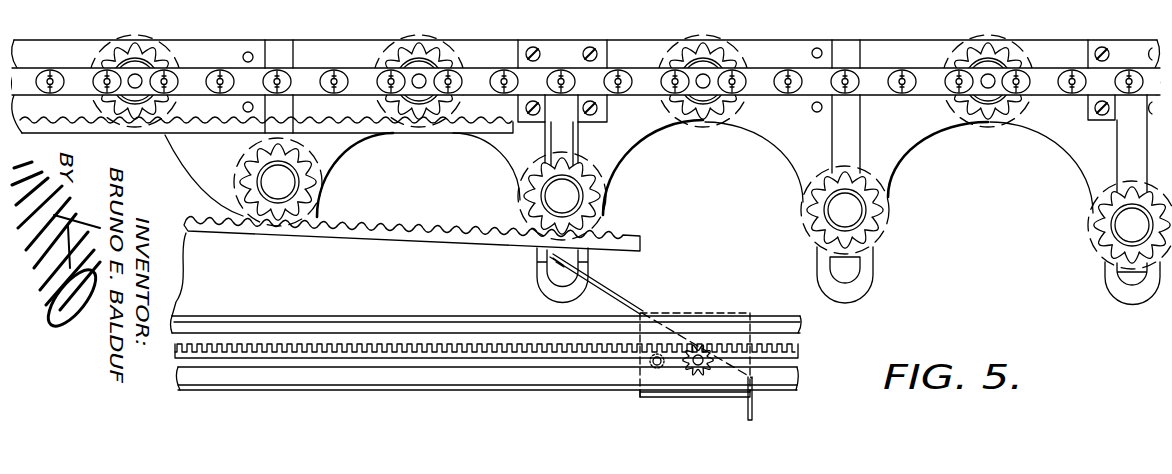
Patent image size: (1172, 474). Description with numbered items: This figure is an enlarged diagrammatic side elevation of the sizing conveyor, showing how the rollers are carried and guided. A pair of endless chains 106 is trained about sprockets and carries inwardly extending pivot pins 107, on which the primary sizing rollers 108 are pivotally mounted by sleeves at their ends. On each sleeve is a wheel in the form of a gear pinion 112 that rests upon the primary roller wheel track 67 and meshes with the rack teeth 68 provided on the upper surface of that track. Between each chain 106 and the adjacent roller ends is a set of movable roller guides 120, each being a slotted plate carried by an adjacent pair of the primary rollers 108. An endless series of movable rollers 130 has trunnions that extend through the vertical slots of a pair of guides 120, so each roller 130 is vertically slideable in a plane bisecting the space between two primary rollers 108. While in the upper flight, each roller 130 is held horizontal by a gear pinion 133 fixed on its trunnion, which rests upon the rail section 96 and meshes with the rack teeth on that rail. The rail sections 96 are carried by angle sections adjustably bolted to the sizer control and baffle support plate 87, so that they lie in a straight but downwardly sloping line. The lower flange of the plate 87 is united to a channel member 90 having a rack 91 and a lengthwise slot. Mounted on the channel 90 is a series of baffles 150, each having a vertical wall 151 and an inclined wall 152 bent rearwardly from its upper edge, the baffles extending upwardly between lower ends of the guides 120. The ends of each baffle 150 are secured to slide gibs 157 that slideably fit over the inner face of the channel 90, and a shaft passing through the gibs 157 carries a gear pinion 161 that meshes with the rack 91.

The primary roller wheel track 67 is at (396, 128).
The rack teeth 68 is at (368, 117).
The sizer control and baffle support plate 87 is at (491, 299).
The channel member 90 is at (503, 387).
The rack 91 is at (680, 344).
The rail section 96 is at (396, 227).
The endless chains 106 is at (812, 96).
The pivot pins 107 is at (422, 79).
The primary sizing rollers 108 is at (706, 38).
The gear pinion 112 is at (421, 55).
The movable roller guides 120 is at (650, 137).
The movable rollers 130 is at (599, 205).
The gear pinion 133 is at (328, 186).
The baffles 150 is at (673, 307).
The vertical wall 151 is at (753, 405).
The inclined wall 152 is at (605, 292).
The slide gibs 157 is at (648, 395).
The gear pinion 161 is at (708, 352).